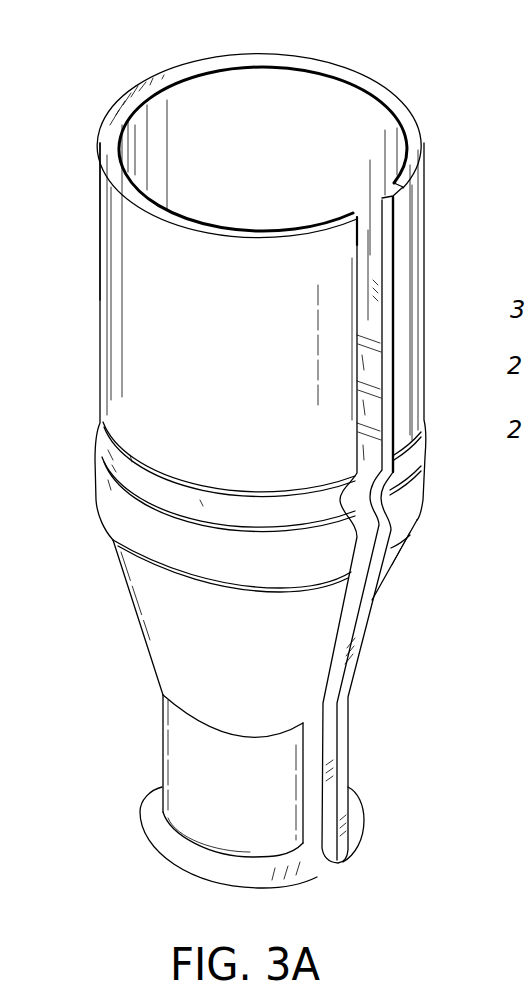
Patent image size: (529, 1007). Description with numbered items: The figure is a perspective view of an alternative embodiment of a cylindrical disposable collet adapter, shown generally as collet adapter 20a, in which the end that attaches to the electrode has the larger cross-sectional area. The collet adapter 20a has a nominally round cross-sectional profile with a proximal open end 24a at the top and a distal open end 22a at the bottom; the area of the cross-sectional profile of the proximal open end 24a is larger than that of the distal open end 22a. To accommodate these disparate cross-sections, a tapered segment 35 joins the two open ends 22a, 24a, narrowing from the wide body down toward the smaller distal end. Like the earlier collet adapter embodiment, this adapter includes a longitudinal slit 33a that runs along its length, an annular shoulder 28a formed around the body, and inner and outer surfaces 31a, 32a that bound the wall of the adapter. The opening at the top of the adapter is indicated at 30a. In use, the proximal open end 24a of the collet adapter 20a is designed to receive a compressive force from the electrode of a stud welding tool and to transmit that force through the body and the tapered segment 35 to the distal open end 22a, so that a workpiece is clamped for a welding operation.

The collet adapter 20a is at (438, 165).
The distal open end 22a is at (197, 760).
The proximal open end 24a is at (206, 332).
The annular shoulder 28a is at (111, 448).
The opening 30a is at (352, 120).
The inner surface 31a is at (158, 281).
The outer surface 32a is at (271, 98).
The longitudinal slit 33a is at (323, 862).
The tapered segment 35 is at (313, 620).